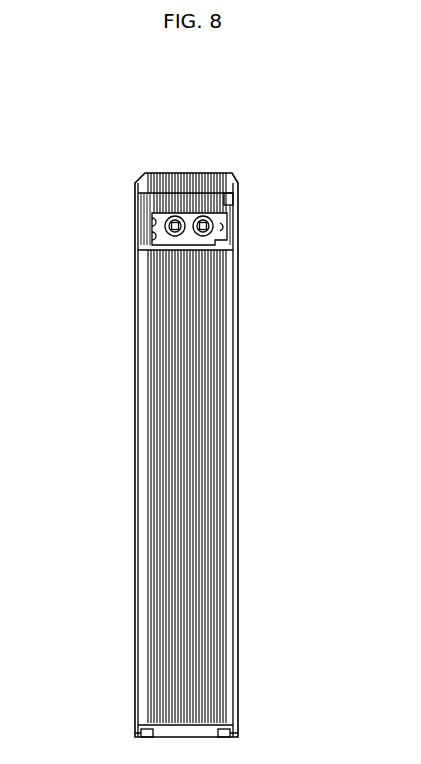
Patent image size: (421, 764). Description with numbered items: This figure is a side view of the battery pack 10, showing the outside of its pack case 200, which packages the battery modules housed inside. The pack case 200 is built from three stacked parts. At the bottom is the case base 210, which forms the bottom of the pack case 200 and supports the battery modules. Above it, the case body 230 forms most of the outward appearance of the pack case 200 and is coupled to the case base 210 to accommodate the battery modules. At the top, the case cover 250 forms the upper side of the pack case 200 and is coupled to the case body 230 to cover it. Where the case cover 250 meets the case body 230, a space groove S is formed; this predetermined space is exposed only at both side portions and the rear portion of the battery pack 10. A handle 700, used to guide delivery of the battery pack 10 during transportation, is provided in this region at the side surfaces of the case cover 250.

The battery pack 10 is at (115, 126).
The pack case 200 is at (272, 434).
The case body 230 is at (118, 320).
The case base 210 is at (118, 727).
The case cover 250 is at (118, 213).
The handle 700 is at (188, 213).
The space groove S is at (222, 228).